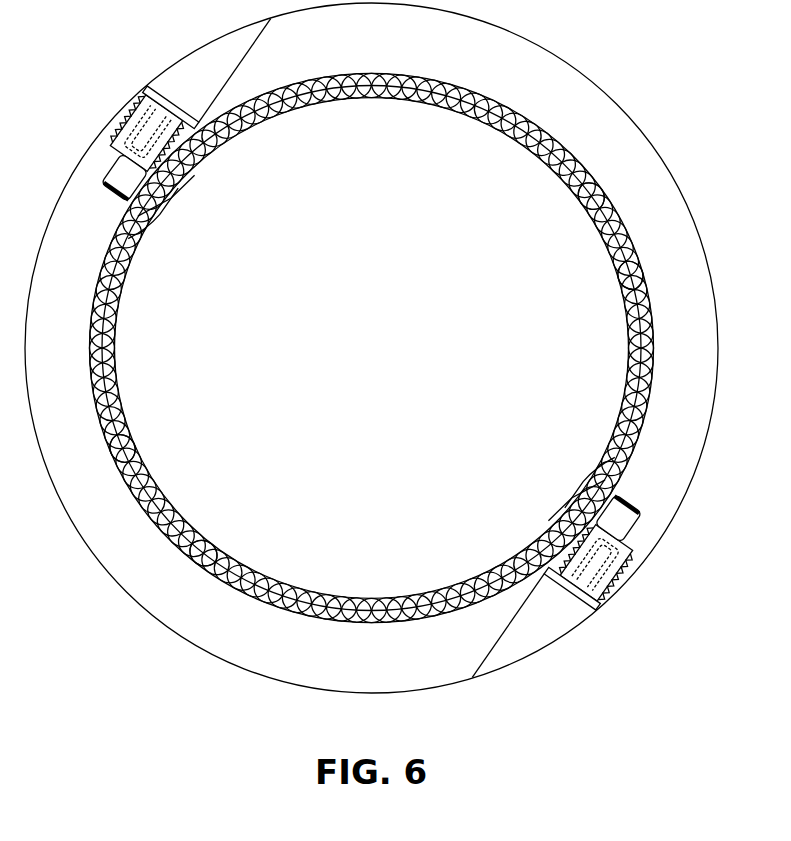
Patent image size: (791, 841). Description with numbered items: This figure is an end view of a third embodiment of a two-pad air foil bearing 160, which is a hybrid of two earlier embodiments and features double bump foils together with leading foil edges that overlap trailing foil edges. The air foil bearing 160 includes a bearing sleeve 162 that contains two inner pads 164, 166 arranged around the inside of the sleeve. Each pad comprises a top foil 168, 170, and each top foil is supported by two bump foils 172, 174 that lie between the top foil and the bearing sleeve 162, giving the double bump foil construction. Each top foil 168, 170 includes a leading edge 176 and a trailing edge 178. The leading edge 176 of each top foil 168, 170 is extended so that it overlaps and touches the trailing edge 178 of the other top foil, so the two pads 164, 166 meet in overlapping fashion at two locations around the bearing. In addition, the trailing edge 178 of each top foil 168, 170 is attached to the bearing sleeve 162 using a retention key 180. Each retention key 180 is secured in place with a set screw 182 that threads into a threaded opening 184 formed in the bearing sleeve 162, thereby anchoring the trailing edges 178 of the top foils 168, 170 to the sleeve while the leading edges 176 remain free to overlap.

The two-pad air foil bearing 160 is at (383, 356).
The bearing sleeve 162 is at (700, 265).
The inner pad 164 is at (371, 347).
The inner pad 166 is at (201, 519).
The top foil 168 is at (440, 110).
The top foil 170 is at (257, 567).
The bump foil 172 is at (588, 193).
The bump foil 174 is at (622, 282).
The leading edge 176 is at (594, 460).
The trailing edge 178 is at (562, 496).
The retention key 180 is at (617, 517).
The set screw 182 is at (617, 553).
The threaded opening 184 is at (575, 608).